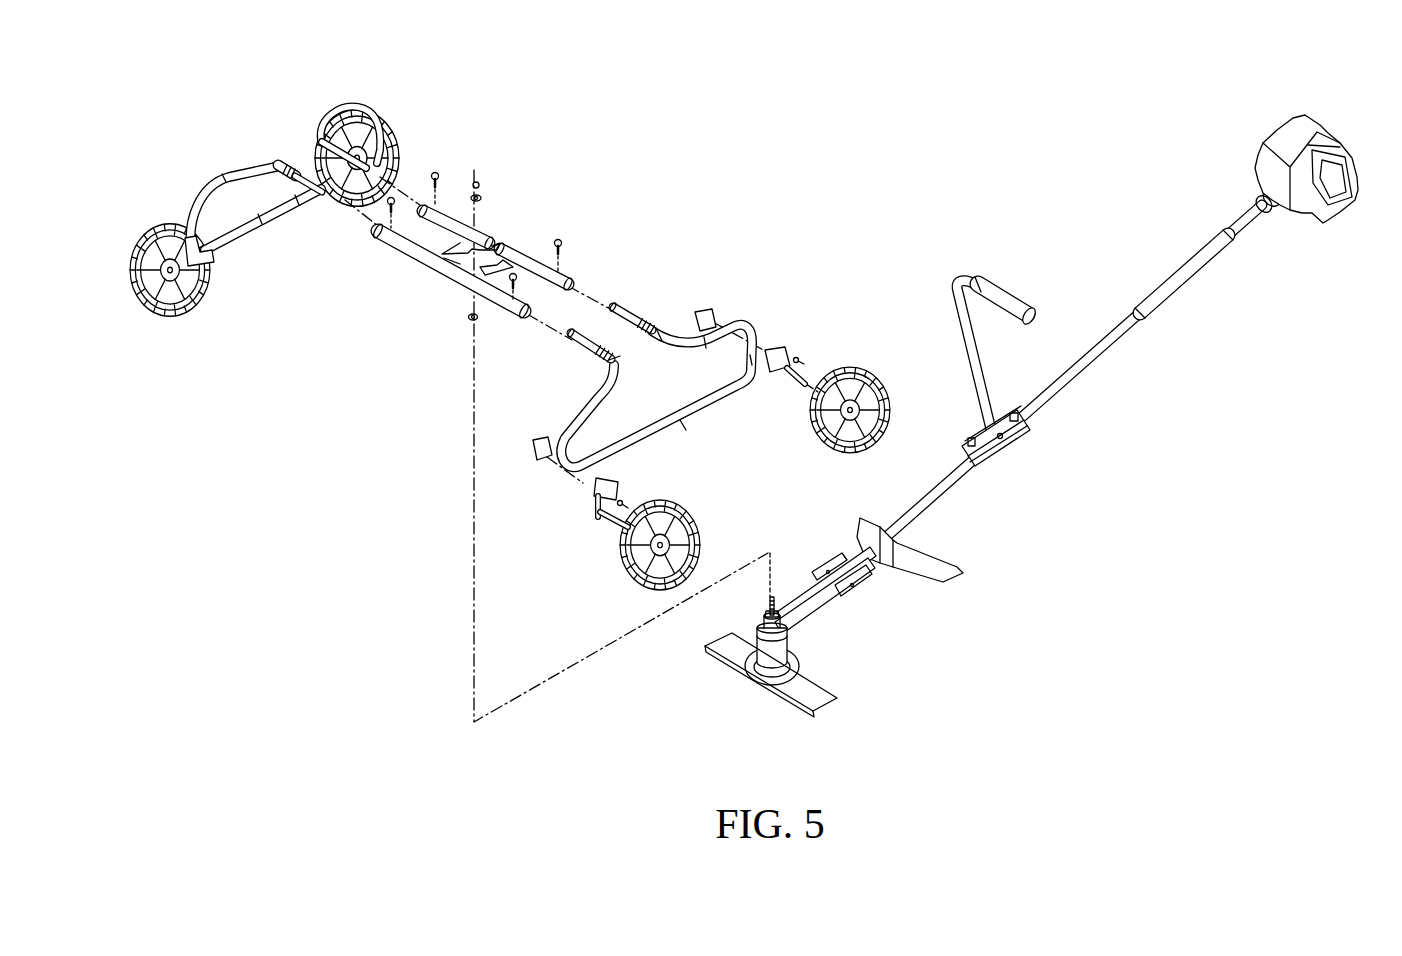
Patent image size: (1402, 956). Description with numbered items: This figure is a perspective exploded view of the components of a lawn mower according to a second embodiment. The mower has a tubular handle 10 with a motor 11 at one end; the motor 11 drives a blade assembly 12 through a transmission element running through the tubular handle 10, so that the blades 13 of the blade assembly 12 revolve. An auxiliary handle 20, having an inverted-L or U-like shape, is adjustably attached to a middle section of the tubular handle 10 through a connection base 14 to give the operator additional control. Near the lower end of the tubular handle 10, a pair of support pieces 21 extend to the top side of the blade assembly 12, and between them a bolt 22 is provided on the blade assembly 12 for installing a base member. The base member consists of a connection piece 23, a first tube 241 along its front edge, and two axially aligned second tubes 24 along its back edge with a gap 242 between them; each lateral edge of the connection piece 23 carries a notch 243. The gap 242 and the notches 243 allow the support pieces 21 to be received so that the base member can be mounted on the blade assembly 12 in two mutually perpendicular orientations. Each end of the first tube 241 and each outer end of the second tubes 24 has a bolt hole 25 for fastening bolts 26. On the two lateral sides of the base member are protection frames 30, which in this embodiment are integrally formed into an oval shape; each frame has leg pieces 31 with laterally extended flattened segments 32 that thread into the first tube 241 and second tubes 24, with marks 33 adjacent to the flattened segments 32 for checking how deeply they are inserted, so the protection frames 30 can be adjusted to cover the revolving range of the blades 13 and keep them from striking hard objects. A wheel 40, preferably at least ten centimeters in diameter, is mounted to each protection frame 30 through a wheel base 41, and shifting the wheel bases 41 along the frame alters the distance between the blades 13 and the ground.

The tubular handle 10 is at (1093, 360).
The motor 11 is at (1283, 143).
The blade assembly 12 is at (778, 652).
The blades 13 is at (813, 692).
The connection base 14 is at (1020, 447).
The auxiliary handle 20 is at (963, 277).
The support pieces 21 is at (785, 600).
The bolt 22 is at (767, 608).
The connection piece 23 is at (453, 265).
The second tubes 24 is at (447, 210).
The bolt hole 25 is at (430, 200).
The bolts 26 is at (435, 172).
The protection frames 30 is at (273, 220).
The leg pieces 31 is at (275, 158).
The flattened segments 32 is at (320, 193).
The marks 33 is at (293, 177).
The wheel 40 is at (172, 310).
The wheel base 41 is at (197, 273).
The first tube 241 is at (442, 267).
The gap 242 is at (493, 245).
The notch 243 is at (500, 267).